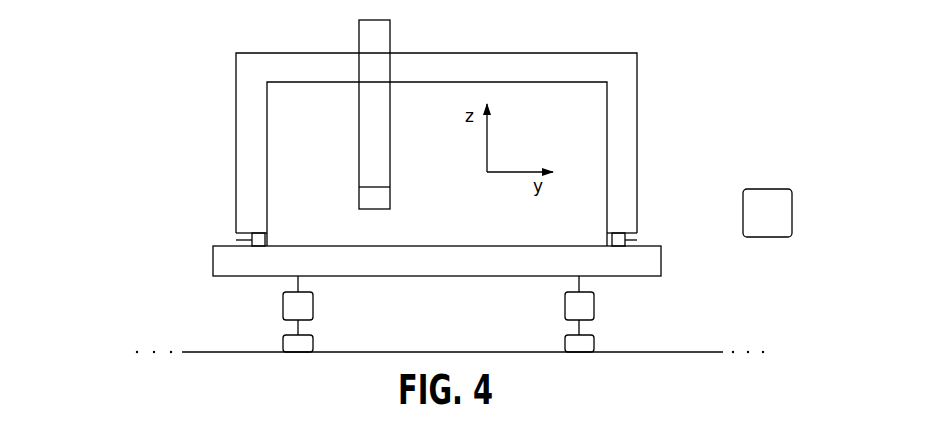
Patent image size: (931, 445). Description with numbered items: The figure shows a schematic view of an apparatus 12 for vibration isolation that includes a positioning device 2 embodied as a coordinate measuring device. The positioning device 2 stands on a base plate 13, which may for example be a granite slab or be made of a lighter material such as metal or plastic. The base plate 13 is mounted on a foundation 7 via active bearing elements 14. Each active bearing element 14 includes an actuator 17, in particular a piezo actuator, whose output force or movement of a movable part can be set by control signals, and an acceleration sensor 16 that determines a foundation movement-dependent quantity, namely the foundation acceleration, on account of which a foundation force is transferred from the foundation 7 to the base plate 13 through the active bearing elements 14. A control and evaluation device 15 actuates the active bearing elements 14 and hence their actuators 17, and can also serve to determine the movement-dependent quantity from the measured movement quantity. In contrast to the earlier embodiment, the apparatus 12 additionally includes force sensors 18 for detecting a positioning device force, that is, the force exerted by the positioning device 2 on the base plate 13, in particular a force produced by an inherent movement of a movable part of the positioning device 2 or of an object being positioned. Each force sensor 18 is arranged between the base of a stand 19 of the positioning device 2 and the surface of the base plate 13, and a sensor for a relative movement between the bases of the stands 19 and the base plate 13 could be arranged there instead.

The positioning device 2 is at (628, 160).
The foundation 7 is at (692, 350).
The apparatus 12 is at (152, 273).
The base plate 13 is at (213, 264).
The active bearing element 14 is at (442, 312).
The control and evaluation device 15 is at (777, 187).
The acceleration sensor 16 is at (315, 340).
The actuator 17 is at (313, 303).
The force sensor 18 is at (265, 240).
The stand 19 is at (235, 240).